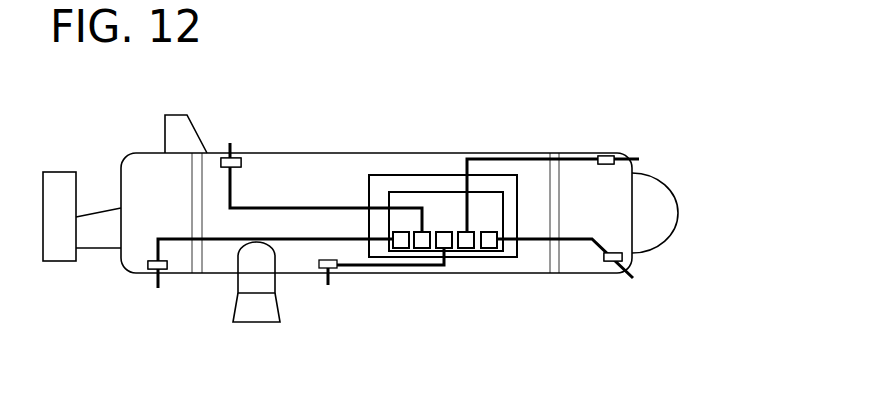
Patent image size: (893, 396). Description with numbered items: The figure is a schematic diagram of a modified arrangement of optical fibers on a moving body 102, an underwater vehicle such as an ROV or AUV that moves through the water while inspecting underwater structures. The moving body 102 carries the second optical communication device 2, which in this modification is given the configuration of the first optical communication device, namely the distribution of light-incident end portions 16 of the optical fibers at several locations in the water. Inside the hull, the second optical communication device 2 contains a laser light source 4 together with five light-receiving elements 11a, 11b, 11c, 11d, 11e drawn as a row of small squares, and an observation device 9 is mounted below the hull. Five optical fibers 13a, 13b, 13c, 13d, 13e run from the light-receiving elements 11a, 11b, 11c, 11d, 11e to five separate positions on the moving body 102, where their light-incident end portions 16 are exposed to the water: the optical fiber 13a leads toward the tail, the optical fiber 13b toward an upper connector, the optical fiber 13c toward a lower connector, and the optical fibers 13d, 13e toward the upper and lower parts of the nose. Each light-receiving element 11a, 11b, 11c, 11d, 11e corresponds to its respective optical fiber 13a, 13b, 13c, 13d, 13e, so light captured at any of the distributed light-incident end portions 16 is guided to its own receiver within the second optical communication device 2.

The moving body 102 is at (632, 106).
The second optical communication device 2 is at (368, 185).
The laser light source 4 is at (398, 193).
The observation device 9 is at (243, 307).
The light-receiving element 11a is at (401, 242).
The light-receiving element 11b is at (422, 242).
The light-receiving element 11c is at (444, 242).
The light-receiving element 11d is at (466, 242).
The light-receiving element 11e is at (489, 242).
The optical fiber 13a is at (290, 243).
The optical fiber 13b is at (280, 205).
The optical fiber 13c is at (367, 268).
The optical fiber 13d is at (537, 158).
The optical fiber 13e is at (573, 240).
The light-incident end portion 16 is at (153, 282).